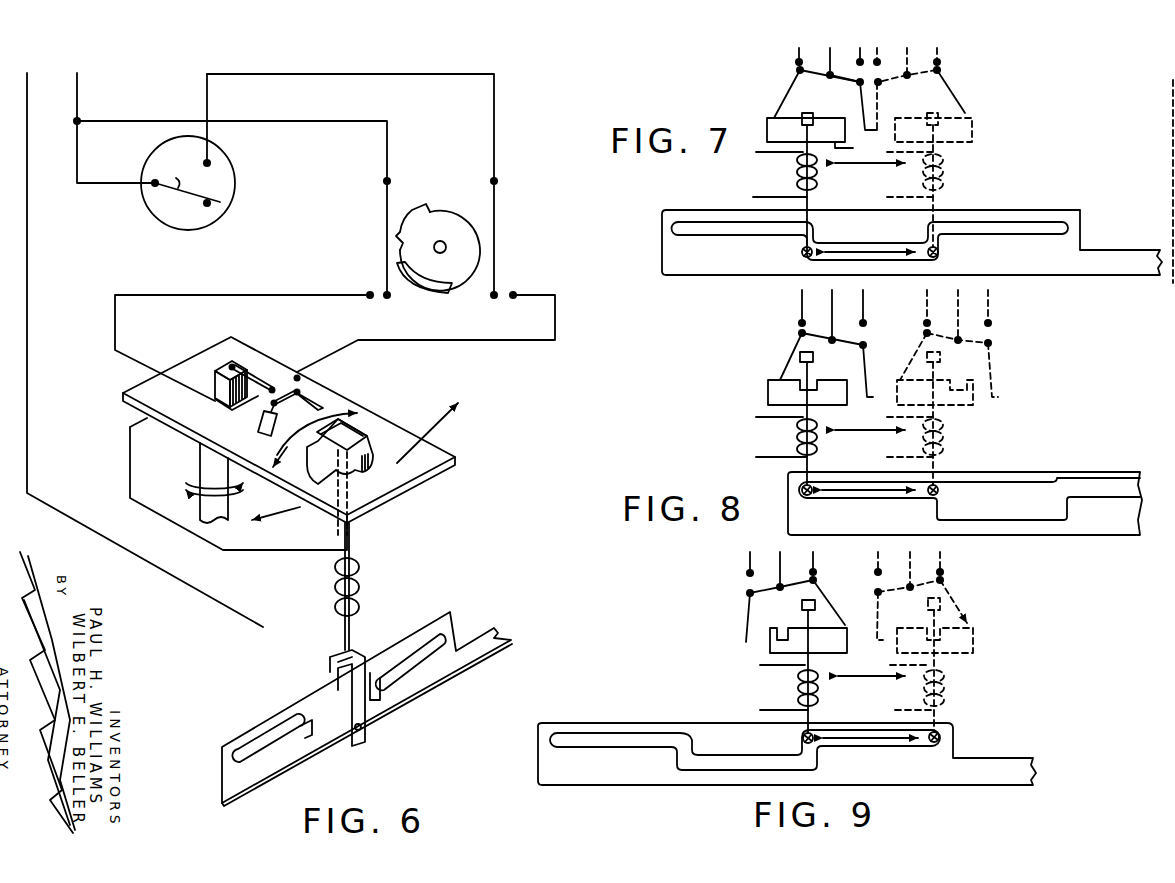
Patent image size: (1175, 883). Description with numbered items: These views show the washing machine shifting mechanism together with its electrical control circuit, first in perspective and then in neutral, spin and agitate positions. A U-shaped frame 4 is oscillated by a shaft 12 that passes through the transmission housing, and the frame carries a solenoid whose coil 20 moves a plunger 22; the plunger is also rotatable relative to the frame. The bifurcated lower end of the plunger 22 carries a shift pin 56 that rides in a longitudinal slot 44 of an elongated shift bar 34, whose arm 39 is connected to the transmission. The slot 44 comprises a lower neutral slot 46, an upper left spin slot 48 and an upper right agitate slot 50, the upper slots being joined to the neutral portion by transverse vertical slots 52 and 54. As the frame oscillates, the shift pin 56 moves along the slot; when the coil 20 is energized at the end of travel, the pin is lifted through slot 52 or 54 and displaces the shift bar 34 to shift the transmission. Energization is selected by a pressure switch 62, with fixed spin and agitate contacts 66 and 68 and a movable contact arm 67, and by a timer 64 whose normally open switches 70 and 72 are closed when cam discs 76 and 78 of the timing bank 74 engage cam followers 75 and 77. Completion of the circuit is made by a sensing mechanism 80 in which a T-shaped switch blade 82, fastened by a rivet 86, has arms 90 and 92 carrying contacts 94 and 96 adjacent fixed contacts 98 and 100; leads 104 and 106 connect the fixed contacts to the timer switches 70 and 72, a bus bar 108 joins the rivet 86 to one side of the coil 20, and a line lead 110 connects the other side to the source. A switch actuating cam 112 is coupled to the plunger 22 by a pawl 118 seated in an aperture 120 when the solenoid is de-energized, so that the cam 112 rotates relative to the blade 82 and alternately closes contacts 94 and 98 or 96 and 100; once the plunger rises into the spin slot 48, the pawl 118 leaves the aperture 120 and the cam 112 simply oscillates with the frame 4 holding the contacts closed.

In FIG. 6, the U-shaped frame 4 is at (462, 457).
In FIG. 6, the shaft 12 is at (205, 458).
In FIG. 6, the solenoid coil assembly 20 is at (358, 580).
In FIG. 7, the solenoid coil assembly 20 is at (800, 175).
In FIG. 8, the solenoid coil assembly 20 is at (800, 440).
In FIG. 9, the solenoid coil assembly 20 is at (800, 688).
In FIG. 6, the solenoid plunger 22 is at (350, 538).
In FIG. 7, the solenoid plunger 22 is at (812, 205).
In FIG. 8, the solenoid plunger 22 is at (813, 467).
In FIG. 9, the solenoid plunger 22 is at (815, 715).
In FIG. 6, the shift bar 34 is at (336, 691).
In FIG. 7, the shift bar 34 is at (668, 262).
In FIG. 8, the shift bar 34 is at (790, 482).
In FIG. 9, the shift bar 34 is at (538, 765).
In FIG. 6, the arm 39 is at (493, 625).
In FIG. 7, the arm 39 is at (1130, 252).
In FIG. 9, the arm 39 is at (1030, 758).
In FIG. 6, the slot 44 is at (430, 655).
In FIG. 6, the lower slot 46 is at (330, 730).
In FIG. 7, the lower slot 46 is at (868, 252).
In FIG. 8, the lower slot 46 is at (990, 515).
In FIG. 9, the lower slot 46 is at (715, 765).
In FIG. 6, the upper left slot 48 is at (255, 740).
In FIG. 7, the upper left slot 48 is at (715, 228).
In FIG. 8, the upper left slot 48 is at (880, 497).
In FIG. 9, the upper left slot 48 is at (605, 740).
In FIG. 6, the upper right slot 50 is at (400, 655).
In FIG. 7, the upper right slot 50 is at (1010, 228).
In FIG. 8, the upper right slot 50 is at (1092, 490).
In FIG. 9, the upper right slot 50 is at (878, 742).
In FIG. 6, the vertical slot 52 is at (303, 705).
In FIG. 7, the vertical slot 52 is at (800, 245).
In FIG. 6, the vertical slot 54 is at (390, 695).
In FIG. 7, the vertical slot 54 is at (945, 243).
In FIG. 6, the shift pin 56 is at (362, 728).
In FIG. 7, the shift pin 56 is at (803, 260).
In FIG. 8, the shift pin 56 is at (808, 497).
In FIG. 9, the shift pin 56 is at (803, 738).
In FIG. 6, the pressure switch 62 is at (160, 222).
In FIG. 6, the timer 64 is at (447, 231).
In FIG. 6, the fixed contact 66 is at (208, 208).
In FIG. 6, the movable contact arm 67 is at (185, 176).
In FIG. 6, the fixed contact 68 is at (212, 160).
In FIG. 6, the normally open switch 70 is at (375, 302).
In FIG. 6, the normally open switch 72 is at (512, 300).
In FIG. 6, the timing bank 74 is at (458, 230).
In FIG. 6, the cam follower 75 is at (398, 248).
In FIG. 6, the cam disc 76 is at (400, 207).
In FIG. 6, the cam follower 77 is at (483, 247).
In FIG. 6, the cam disc 78 is at (398, 292).
In FIG. 6, the sensing mechanism 80 is at (290, 378).
In FIG. 6, the T-shaped switch blade 82 is at (236, 362).
In FIG. 7, the T-shaped switch blade 82 is at (785, 92).
In FIG. 6, the rivet 86 is at (220, 365).
In FIG. 6, the laterally extending arm 90 is at (270, 432).
In FIG. 6, the laterally extending arm 92 is at (308, 400).
In FIG. 6, the electrical contact 94 is at (262, 415).
In FIG. 7, the electrical contact 94 is at (797, 70).
In FIG. 8, the electrical contact 94 is at (795, 334).
In FIG. 9, the electrical contact 94 is at (748, 593).
In FIG. 6, the electrical contact 96 is at (307, 385).
In FIG. 7, the electrical contact 96 is at (858, 85).
In FIG. 8, the electrical contact 96 is at (868, 345).
In FIG. 9, the electrical contact 96 is at (817, 581).
In FIG. 6, the fixed electrical contact 98 is at (271, 386).
In FIG. 7, the fixed electrical contact 98 is at (795, 62).
In FIG. 8, the fixed electrical contact 98 is at (795, 323).
In FIG. 9, the fixed electrical contact 98 is at (745, 573).
In FIG. 6, the fixed electrical contact 100 is at (297, 375).
In FIG. 7, the fixed electrical contact 100 is at (813, 73).
In FIG. 8, the fixed electrical contact 100 is at (864, 323).
In FIG. 9, the fixed electrical contact 100 is at (815, 575).
In FIG. 6, the electrical lead 104 is at (115, 318).
In FIG. 6, the electrical lead 106 is at (545, 342).
In FIG. 6, the bus bar 108 is at (130, 472).
In FIG. 7, the bus bar 108 is at (825, 90).
In FIG. 6, the line lead 110 is at (70, 522).
In FIG. 6, the switch actuating cam 112 is at (305, 470).
In FIG. 7, the switch actuating cam 112 is at (890, 150).
In FIG. 8, the switch actuating cam 112 is at (768, 400).
In FIG. 9, the switch actuating cam 112 is at (975, 655).
In FIG. 6, the pawl 118 is at (345, 440).
In FIG. 7, the pawl 118 is at (865, 108).
In FIG. 8, the pawl 118 is at (813, 357).
In FIG. 9, the pawl 118 is at (802, 605).
In FIG. 6, the aperture 120 is at (375, 480).
In FIG. 7, the aperture 120 is at (802, 121).
In FIG. 8, the aperture 120 is at (800, 387).
In FIG. 9, the aperture 120 is at (770, 648).